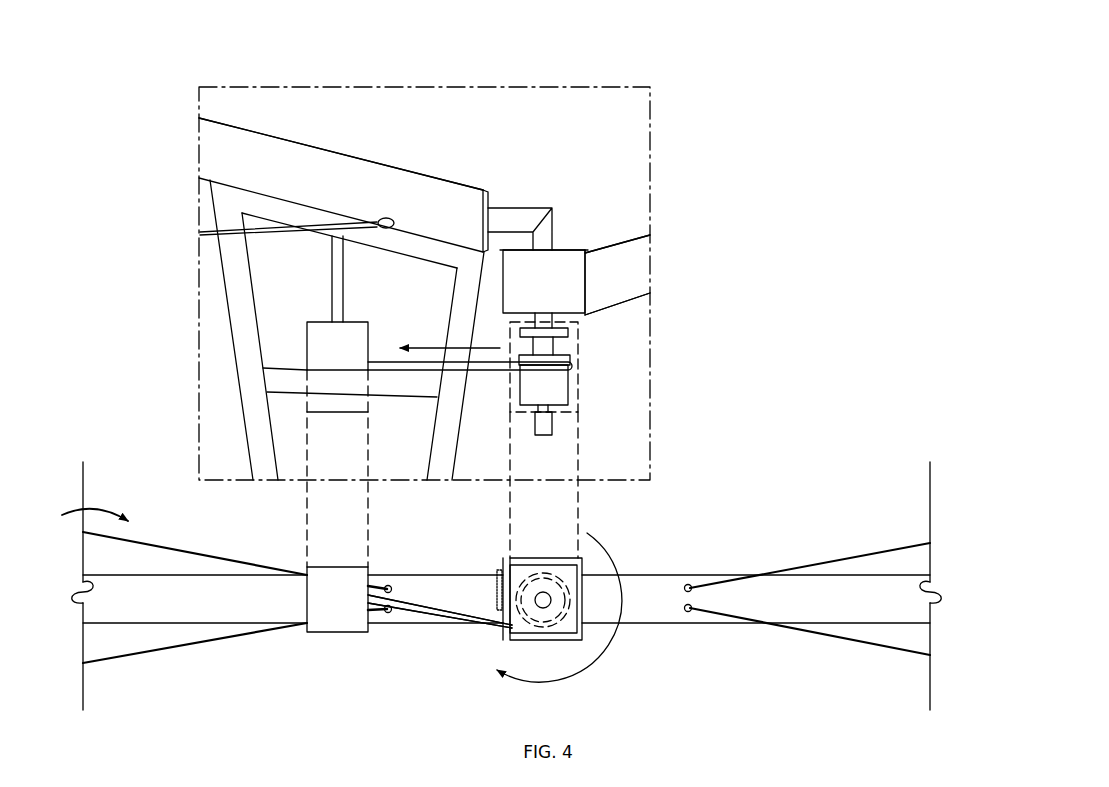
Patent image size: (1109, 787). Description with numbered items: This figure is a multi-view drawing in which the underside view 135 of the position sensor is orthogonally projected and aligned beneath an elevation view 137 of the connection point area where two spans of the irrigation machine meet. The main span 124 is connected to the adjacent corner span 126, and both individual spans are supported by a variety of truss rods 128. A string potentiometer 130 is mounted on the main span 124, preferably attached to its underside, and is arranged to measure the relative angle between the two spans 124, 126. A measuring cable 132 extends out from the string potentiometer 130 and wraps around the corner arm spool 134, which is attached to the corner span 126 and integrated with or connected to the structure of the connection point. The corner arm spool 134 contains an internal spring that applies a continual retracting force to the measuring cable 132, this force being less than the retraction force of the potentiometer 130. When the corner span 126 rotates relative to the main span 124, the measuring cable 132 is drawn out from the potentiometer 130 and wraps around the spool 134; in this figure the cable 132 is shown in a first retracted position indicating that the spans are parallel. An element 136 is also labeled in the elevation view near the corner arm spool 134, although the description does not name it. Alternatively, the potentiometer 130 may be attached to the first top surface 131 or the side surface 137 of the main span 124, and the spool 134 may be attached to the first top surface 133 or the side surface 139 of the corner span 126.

The main span 124 is at (278, 158).
The corner span 126 is at (605, 262).
The truss rods 128 is at (380, 224).
The string potentiometer 130 is at (332, 352).
The first top surface of the first span 131 is at (363, 157).
The measuring cable 132 is at (388, 363).
The first top surface of the second/corner span 133 is at (632, 238).
The corner arm spool 134 is at (567, 355).
The underside view 135 is at (74, 521).
The motor 136 is at (548, 290).
The elevation view 137 is at (205, 91).
The side surface of the second/corner span 139 is at (584, 277).